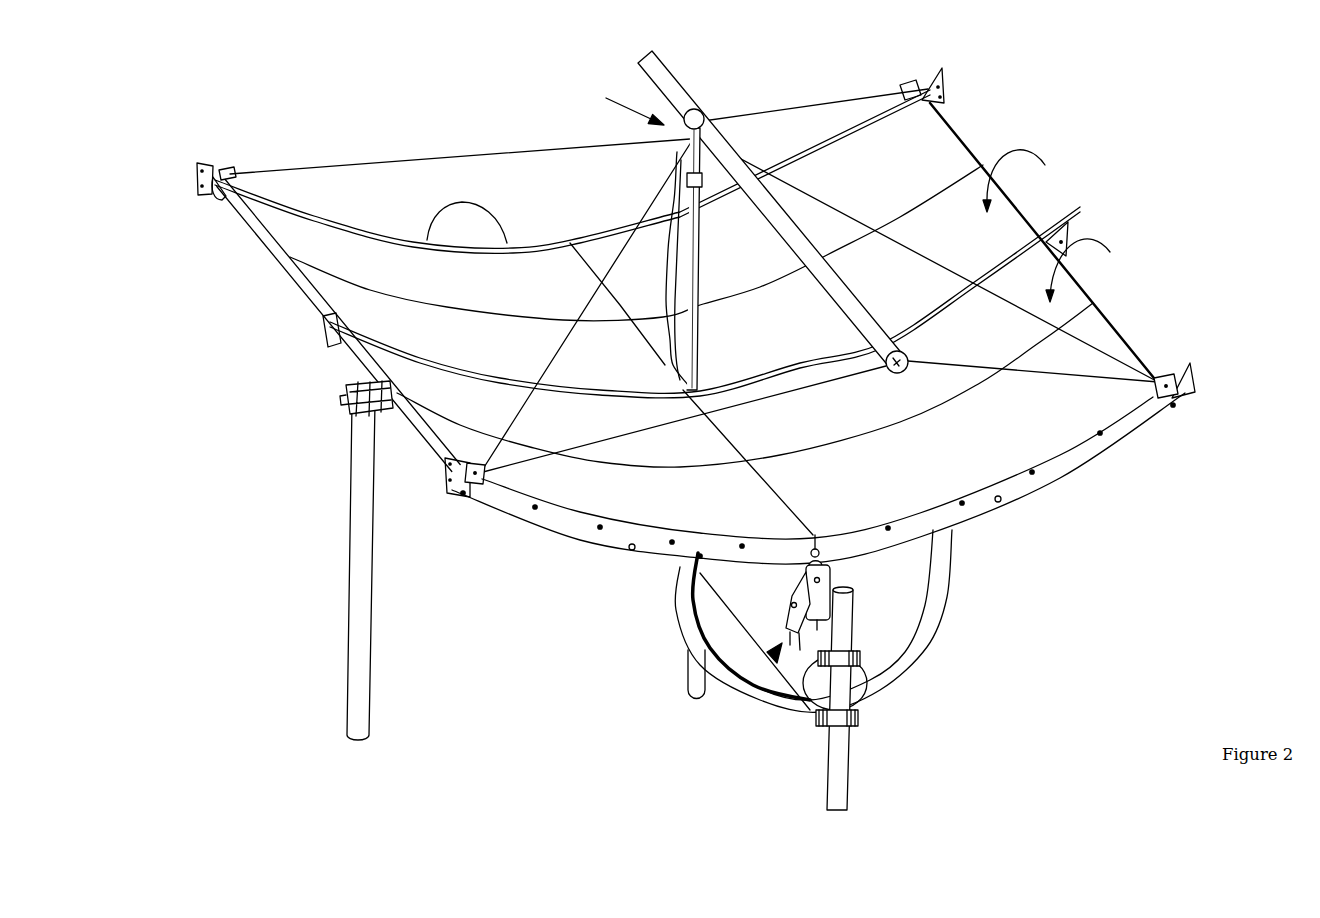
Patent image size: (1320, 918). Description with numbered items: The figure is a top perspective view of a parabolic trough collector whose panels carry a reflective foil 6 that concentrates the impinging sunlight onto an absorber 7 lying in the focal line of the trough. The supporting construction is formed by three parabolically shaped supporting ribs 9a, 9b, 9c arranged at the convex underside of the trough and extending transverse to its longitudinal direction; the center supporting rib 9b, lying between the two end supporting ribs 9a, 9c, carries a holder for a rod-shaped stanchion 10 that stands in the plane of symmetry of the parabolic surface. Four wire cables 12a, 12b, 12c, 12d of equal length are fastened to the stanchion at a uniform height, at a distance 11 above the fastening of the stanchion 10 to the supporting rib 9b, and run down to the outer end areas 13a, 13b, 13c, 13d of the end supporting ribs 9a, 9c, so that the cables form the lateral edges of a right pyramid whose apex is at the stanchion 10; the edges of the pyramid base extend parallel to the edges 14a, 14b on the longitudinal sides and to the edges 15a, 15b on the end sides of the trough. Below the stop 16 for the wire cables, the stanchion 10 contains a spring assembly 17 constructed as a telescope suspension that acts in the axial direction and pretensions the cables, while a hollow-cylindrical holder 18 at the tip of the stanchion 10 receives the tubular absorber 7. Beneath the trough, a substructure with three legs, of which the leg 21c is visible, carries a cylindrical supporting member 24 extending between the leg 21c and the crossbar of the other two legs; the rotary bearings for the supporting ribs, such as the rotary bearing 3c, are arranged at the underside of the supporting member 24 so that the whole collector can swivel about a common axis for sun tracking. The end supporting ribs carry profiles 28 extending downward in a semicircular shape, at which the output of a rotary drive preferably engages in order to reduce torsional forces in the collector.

The rotary bearing 3c is at (773, 660).
The reflective foil 6 is at (1053, 226).
The absorber 7 is at (652, 73).
The supporting rib 9a is at (609, 230).
The supporting rib 9b is at (1081, 209).
The supporting rib 9c is at (1035, 478).
The stanchion 10 is at (701, 246).
The distance 11 is at (632, 287).
The wire cable 12a is at (370, 168).
The wire cable 12b is at (789, 112).
The wire cable 12c is at (1108, 354).
The wire cable 12d is at (505, 436).
The outer end area of supporting rib 13a is at (197, 195).
The outer end area of supporting rib 13b is at (943, 87).
The outer end area of supporting rib 13c is at (1192, 390).
The outer end area of supporting rib 13d is at (446, 492).
The longitudinal side edge 14a is at (287, 278).
The longitudinal side edge 14b is at (1107, 320).
The end side edge 15a is at (552, 247).
The end side edge 15b is at (1063, 450).
The stop 16 is at (619, 107).
The spring assembly 17 is at (690, 157).
The hollow-cylindrical holder 18 is at (696, 109).
The leg 21c is at (833, 767).
The cylindrical supporting member 24 is at (747, 600).
The semicircular profile 28 is at (930, 630).